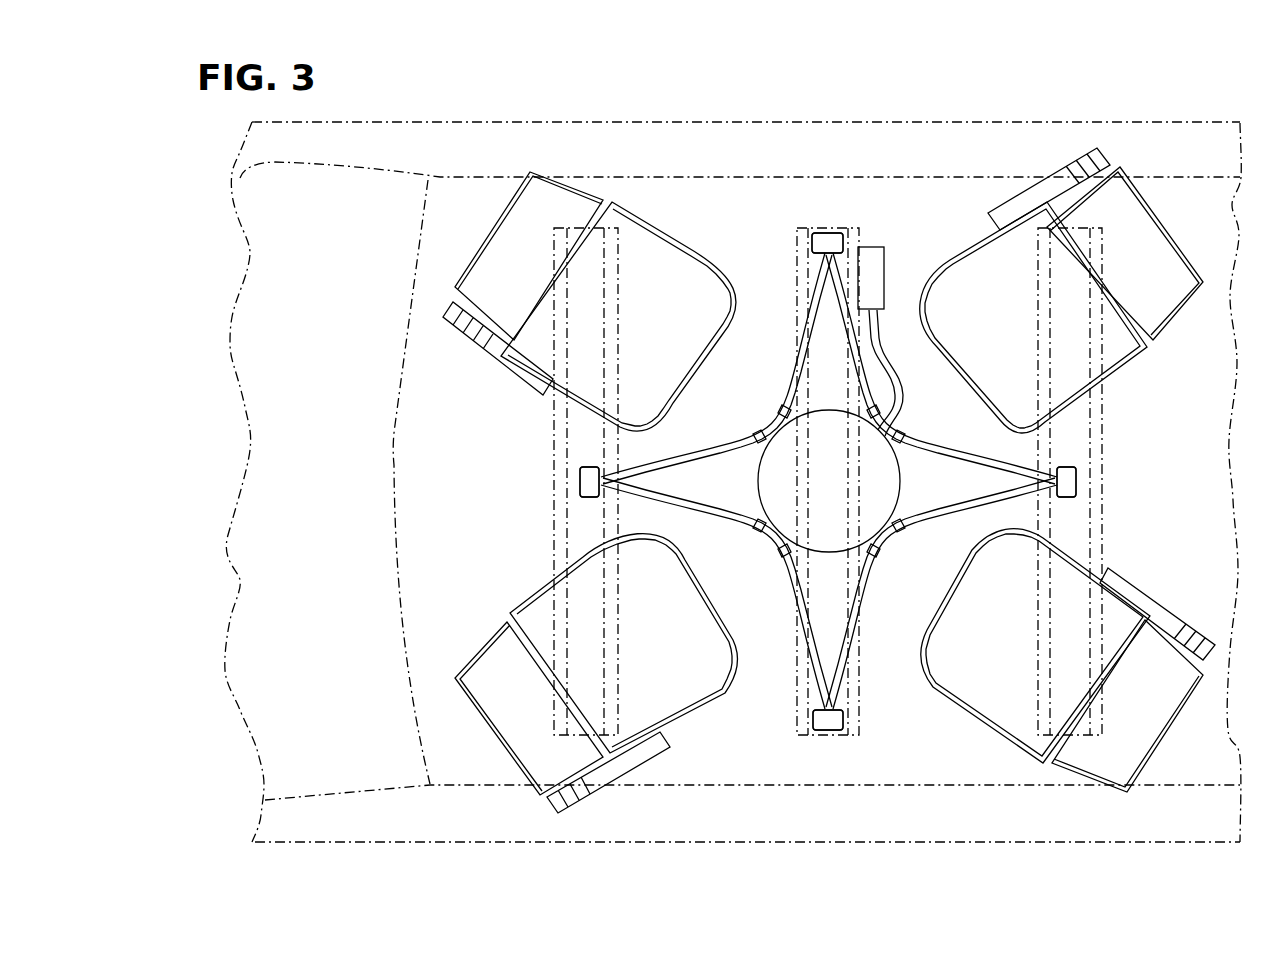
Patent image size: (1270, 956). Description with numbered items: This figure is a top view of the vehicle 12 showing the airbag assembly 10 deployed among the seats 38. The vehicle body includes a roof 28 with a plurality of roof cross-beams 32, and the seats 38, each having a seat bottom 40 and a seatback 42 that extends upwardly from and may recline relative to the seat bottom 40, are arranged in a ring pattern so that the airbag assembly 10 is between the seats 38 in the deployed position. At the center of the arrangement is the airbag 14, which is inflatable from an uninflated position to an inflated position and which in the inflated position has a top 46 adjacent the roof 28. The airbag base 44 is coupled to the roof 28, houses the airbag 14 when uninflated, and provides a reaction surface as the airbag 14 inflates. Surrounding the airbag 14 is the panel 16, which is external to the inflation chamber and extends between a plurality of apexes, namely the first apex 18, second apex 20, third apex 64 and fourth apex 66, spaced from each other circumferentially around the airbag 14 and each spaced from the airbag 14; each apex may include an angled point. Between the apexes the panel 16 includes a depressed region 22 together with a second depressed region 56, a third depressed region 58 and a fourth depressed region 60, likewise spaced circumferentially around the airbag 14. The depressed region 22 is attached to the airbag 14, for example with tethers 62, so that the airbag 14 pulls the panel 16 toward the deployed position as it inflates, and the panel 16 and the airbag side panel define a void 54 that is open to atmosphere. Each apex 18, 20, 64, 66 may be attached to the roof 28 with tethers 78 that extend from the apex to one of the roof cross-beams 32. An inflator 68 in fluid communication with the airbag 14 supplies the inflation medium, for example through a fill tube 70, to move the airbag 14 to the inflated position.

The airbag assembly 10 is at (818, 463).
The vehicle 12 is at (1135, 118).
The airbag 14 is at (750, 485).
The panel 16 is at (626, 468).
The first apex 18 is at (828, 712).
The second apex 20 is at (580, 482).
The depressed region 22 is at (767, 547).
The roof 28 is at (915, 175).
The roof cross-beams 32 is at (616, 200).
The seats 38 is at (827, 460).
The seat bottom 40 is at (680, 236).
The seatback 42 is at (575, 185).
The airbag base 44 is at (869, 587).
The top 46 is at (925, 493).
The void 54 is at (948, 484).
The second depressed region 56 is at (770, 422).
The third depressed region 58 is at (898, 422).
The fourth depressed region 60 is at (887, 548).
The tethers 62 is at (792, 406).
The third apex 64 is at (826, 238).
The fourth apex 66 is at (1077, 486).
The inflator 68 is at (884, 278).
The fill tube 70 is at (882, 325).
The tethers 78 is at (838, 242).